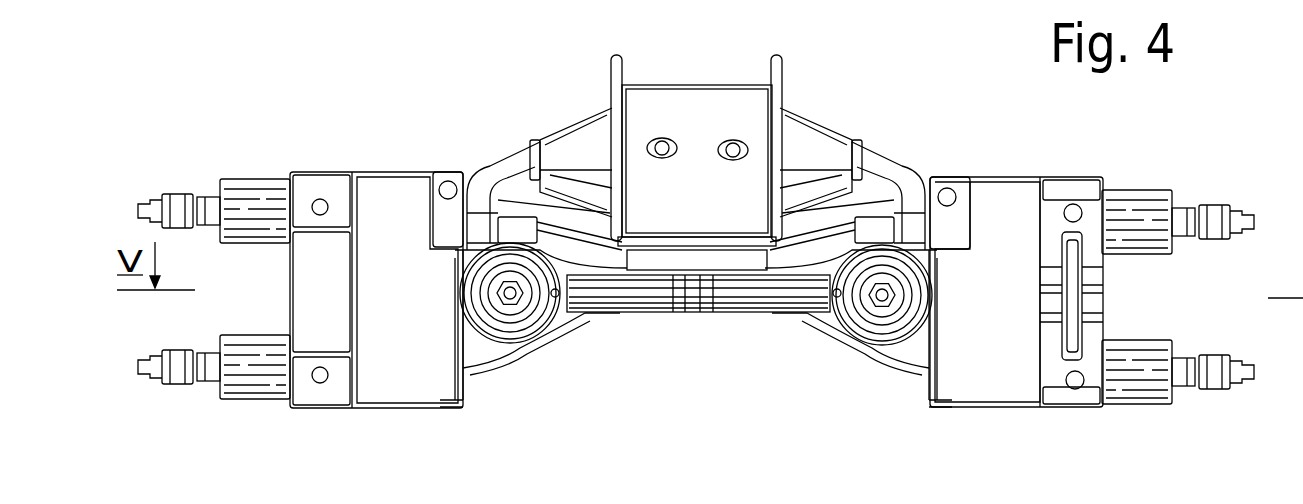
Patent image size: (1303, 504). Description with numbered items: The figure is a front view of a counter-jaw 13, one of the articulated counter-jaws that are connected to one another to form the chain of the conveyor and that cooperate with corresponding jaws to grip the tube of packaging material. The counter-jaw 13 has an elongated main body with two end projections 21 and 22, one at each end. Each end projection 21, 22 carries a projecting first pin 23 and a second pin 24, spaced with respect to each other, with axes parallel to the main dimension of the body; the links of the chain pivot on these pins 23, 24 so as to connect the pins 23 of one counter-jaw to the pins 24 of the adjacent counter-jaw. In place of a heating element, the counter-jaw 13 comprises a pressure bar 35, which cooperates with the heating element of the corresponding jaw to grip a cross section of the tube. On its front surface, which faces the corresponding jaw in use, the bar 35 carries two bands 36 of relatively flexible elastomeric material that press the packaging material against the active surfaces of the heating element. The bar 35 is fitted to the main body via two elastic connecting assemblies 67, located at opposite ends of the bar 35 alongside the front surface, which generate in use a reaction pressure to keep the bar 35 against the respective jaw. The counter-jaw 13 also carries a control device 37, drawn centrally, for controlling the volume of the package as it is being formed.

The counter-jaw 13 is at (523, 141).
The end projection 21 is at (384, 200).
The end projection 22 is at (988, 197).
The first pin 23 is at (180, 380).
The second pin 24 is at (176, 203).
The pressure bar 35 is at (685, 326).
The band 36 is at (640, 278).
The control device 37 is at (806, 113).
The elastic connecting assembly 67 is at (512, 343).